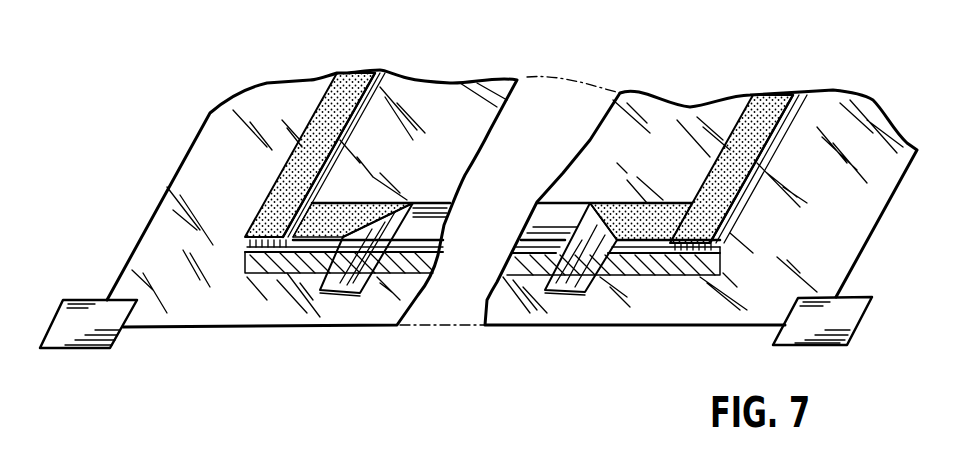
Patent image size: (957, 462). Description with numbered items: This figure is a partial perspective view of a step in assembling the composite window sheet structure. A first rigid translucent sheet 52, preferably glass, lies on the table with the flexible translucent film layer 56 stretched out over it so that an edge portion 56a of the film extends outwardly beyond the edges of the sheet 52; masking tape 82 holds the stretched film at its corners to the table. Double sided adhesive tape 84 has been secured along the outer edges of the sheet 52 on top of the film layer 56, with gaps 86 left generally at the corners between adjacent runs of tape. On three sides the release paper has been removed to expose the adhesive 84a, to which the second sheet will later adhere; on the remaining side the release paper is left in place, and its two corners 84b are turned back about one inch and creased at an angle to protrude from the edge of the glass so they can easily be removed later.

The first rigid translucent sheet 52 is at (670, 277).
The intermediate flexible translucent film layer 56 is at (215, 330).
The edge portion of the flexible translucent film layer 56a is at (251, 174).
The masking tape 82 is at (90, 305).
The double sided adhesive tape 84 is at (314, 104).
The adhesive 84a is at (360, 73).
The corners of the release paper 84b is at (345, 295).
The gaps 86 is at (303, 222).